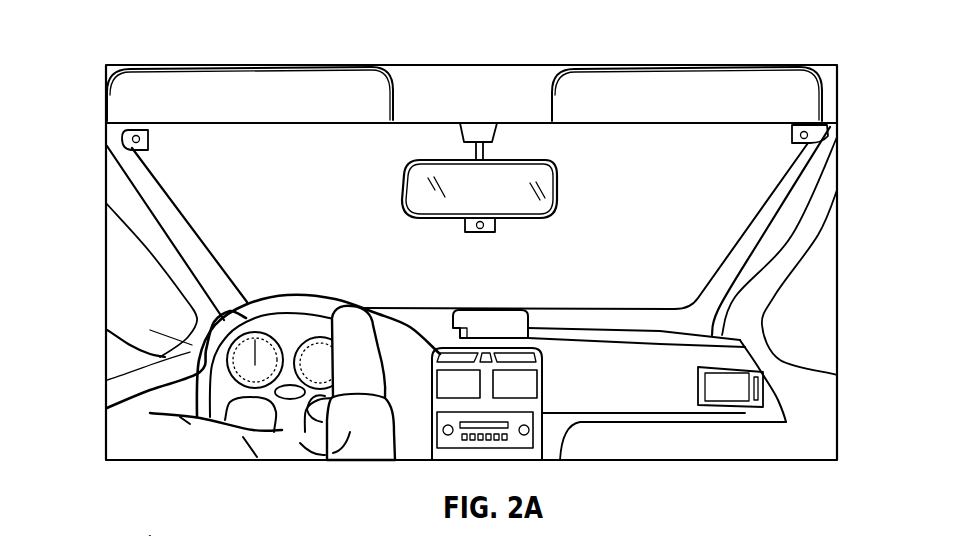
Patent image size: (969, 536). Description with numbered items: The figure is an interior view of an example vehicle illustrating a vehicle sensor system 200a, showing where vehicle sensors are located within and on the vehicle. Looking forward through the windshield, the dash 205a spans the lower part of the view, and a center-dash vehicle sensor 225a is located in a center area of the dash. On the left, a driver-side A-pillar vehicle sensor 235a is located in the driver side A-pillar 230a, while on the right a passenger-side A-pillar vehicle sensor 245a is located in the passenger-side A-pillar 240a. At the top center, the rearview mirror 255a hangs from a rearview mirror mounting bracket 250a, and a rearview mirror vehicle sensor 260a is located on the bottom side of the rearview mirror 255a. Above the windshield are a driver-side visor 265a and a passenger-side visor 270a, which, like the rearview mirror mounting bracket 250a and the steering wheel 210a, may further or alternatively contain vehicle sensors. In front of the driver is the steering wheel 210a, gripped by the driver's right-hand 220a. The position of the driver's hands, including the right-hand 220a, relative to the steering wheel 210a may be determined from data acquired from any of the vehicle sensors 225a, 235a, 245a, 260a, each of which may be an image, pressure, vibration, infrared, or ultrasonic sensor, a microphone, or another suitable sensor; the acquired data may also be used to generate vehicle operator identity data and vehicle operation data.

The vehicle sensor system 200a is at (238, 44).
The dashboard 205a is at (600, 405).
The steering wheel 210a is at (264, 298).
The right-hand of the vehicle driver 220a is at (362, 330).
The center-dash vehicle sensor 225a is at (508, 320).
The driver side A-pillar 230a is at (128, 196).
The driver-side A-pillar vehicle sensor 235a is at (121, 138).
The passenger-side A-pillar 240a is at (826, 213).
The passenger-side A-pillar vehicle sensor 245a is at (830, 126).
The rearview mirror mounting bracket 250a is at (476, 132).
The rearview mirror 255a is at (522, 172).
The rearview mirror vehicle sensor 260a is at (490, 232).
The driver-side visor 265a is at (318, 96).
The passenger-side visor 270a is at (687, 71).